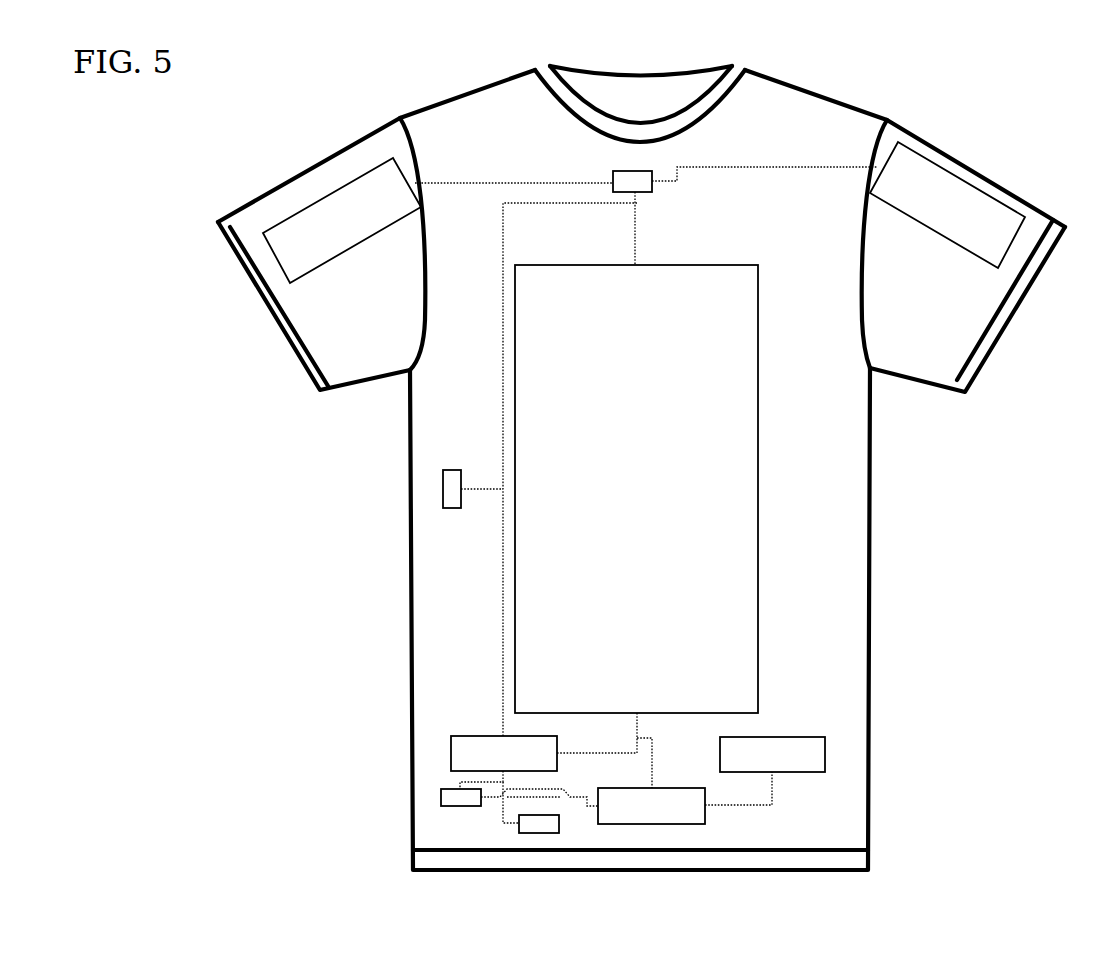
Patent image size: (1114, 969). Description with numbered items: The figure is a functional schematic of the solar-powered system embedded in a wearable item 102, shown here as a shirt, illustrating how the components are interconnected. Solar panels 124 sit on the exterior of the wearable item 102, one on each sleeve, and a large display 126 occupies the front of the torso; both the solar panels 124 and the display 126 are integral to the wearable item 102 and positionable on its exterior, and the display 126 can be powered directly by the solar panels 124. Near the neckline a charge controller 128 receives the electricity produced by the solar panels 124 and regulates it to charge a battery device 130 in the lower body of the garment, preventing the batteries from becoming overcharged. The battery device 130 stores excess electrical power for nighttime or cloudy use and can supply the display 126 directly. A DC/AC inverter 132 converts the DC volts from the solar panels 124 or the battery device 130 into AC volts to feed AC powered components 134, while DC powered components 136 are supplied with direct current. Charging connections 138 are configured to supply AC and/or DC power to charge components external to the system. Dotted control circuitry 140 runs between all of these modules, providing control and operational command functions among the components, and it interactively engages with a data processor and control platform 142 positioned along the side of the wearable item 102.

The wearable item 102 is at (775, 72).
The solar panels 124 is at (327, 193).
The display 126 is at (762, 370).
The charge controller 128 is at (635, 193).
The battery device 130 is at (502, 733).
The DC/AC inverter 132 is at (650, 825).
The AC powered components 134 is at (773, 733).
The DC powered components 136 is at (538, 833).
The charging connections 138 is at (440, 797).
The control circuitry 140 is at (457, 183).
The data processor and control platform 142 is at (440, 492).